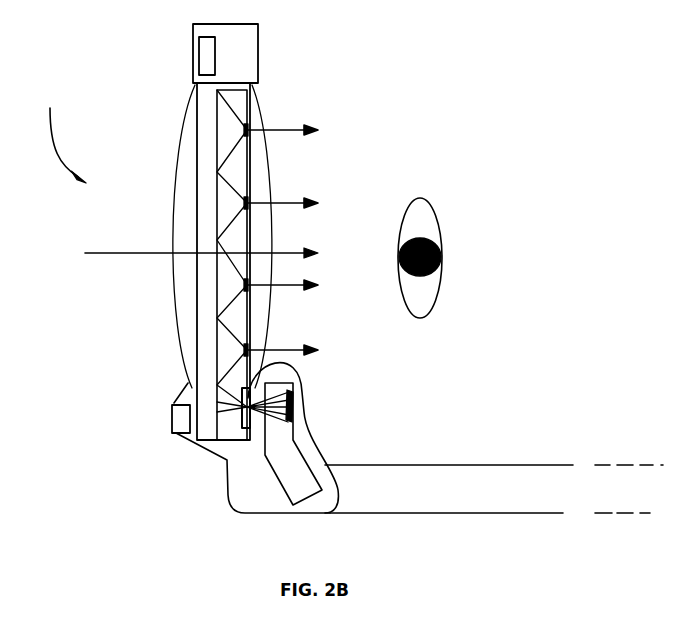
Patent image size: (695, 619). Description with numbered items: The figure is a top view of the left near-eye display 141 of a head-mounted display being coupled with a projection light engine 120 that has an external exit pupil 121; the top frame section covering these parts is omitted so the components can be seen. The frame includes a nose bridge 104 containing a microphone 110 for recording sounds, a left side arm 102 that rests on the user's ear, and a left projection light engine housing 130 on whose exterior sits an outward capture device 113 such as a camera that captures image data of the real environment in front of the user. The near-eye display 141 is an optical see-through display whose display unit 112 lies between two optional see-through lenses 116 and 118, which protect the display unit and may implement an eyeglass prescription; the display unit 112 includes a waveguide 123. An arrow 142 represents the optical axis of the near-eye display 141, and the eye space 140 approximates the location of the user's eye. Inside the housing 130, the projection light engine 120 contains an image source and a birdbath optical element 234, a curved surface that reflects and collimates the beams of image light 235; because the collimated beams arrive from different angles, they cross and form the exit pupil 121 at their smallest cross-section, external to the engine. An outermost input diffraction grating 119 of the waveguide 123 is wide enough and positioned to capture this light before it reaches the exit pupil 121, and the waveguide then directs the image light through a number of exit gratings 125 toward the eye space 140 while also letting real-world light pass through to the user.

The side arm 102 is at (458, 472).
The nose bridge 104 is at (247, 62).
The microphone 110 is at (203, 72).
The display unit 112 is at (216, 165).
The outward capture device 113 is at (172, 415).
The see-through lens 116 is at (182, 200).
The see-through lens 118 is at (268, 241).
The input diffraction grating 119 is at (293, 384).
The projection light engine 120 is at (297, 430).
The exit pupil 121 is at (240, 410).
The waveguide 123 is at (242, 172).
The exit grating 125 is at (243, 128).
The projection light engine housing 130 is at (238, 499).
The eye space 140 is at (443, 258).
The near-eye display 141 is at (58, 134).
The optical axis 142 is at (123, 255).
The birdbath optical element 234 is at (292, 398).
The beam of image light 235 is at (275, 415).